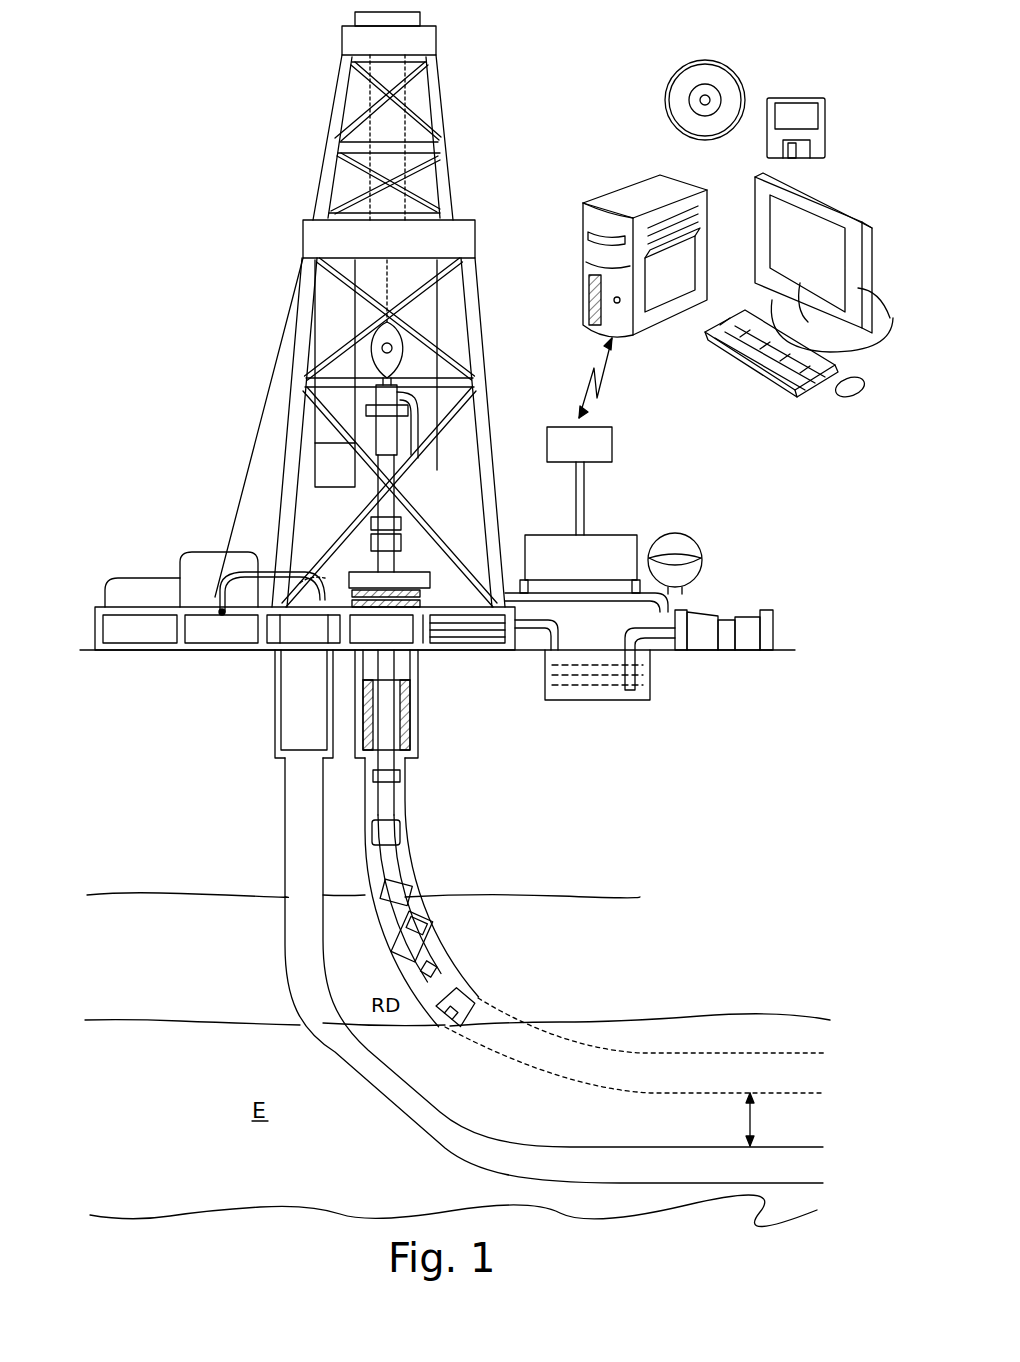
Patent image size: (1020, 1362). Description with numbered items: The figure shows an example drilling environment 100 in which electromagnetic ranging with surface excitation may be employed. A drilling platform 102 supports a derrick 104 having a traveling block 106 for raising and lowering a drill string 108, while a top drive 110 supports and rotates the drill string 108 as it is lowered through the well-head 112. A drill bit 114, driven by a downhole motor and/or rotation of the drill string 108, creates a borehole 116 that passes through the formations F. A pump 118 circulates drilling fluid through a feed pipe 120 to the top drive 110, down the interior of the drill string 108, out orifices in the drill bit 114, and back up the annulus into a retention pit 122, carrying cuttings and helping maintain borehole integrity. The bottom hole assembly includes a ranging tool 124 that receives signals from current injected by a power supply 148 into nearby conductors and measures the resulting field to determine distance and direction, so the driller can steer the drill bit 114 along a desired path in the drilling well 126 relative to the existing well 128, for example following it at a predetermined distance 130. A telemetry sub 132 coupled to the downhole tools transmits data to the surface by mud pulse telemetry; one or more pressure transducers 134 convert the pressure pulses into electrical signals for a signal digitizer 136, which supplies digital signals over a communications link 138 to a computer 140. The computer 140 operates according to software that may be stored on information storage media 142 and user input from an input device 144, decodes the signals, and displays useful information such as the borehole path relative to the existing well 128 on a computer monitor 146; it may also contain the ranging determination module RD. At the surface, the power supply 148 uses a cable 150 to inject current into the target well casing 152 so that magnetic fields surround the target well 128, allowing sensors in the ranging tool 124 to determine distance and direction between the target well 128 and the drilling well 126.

The drilling environment 100 is at (200, 158).
The drilling platform 102 is at (95, 622).
The derrick 104 is at (445, 140).
The traveling block 106 is at (402, 358).
The drill string 108 is at (398, 796).
The top drive 110 is at (392, 430).
The well-head 112 is at (356, 563).
The drill bit 114 is at (460, 995).
The borehole 116 is at (408, 860).
The pump 118 is at (737, 618).
The feed pipe 120 is at (647, 603).
The retention pit 122 is at (628, 692).
The ranging tool 124 is at (393, 990).
The drilling well 126 is at (607, 1053).
The existing well 128 is at (428, 1147).
The predetermined distance 130 is at (772, 1119).
The telemetry sub 132 is at (423, 940).
The pressure transducer 134 is at (632, 583).
The signal digitizer 136 is at (579, 481).
The communications link 138 is at (611, 378).
The computer 140 is at (683, 310).
The information storage media 142 is at (790, 98).
The input device 144 is at (780, 377).
The computer monitor 146 is at (824, 262).
The power supply 148 is at (215, 650).
The cable 150 is at (247, 573).
The target well casing 152 is at (275, 722).